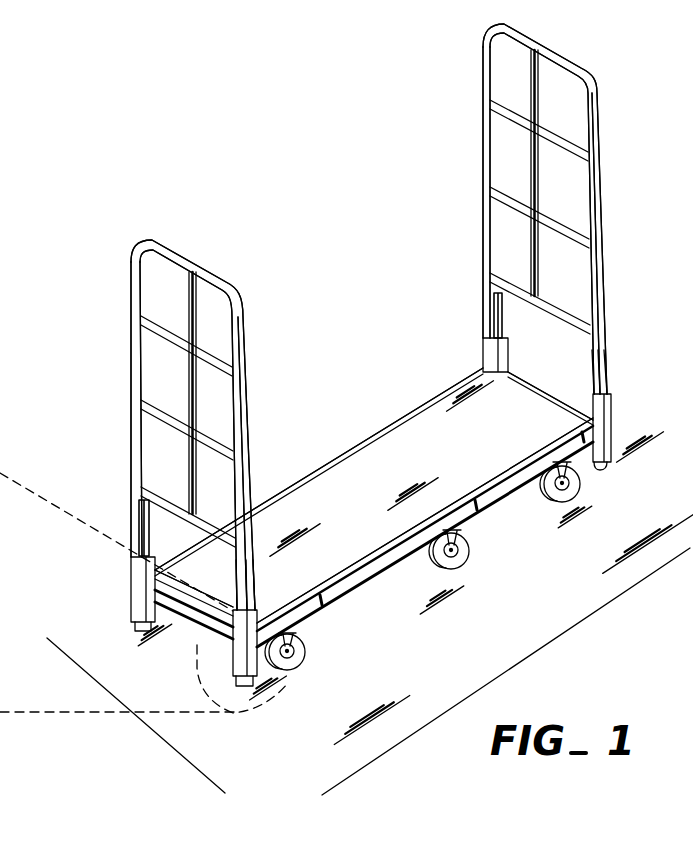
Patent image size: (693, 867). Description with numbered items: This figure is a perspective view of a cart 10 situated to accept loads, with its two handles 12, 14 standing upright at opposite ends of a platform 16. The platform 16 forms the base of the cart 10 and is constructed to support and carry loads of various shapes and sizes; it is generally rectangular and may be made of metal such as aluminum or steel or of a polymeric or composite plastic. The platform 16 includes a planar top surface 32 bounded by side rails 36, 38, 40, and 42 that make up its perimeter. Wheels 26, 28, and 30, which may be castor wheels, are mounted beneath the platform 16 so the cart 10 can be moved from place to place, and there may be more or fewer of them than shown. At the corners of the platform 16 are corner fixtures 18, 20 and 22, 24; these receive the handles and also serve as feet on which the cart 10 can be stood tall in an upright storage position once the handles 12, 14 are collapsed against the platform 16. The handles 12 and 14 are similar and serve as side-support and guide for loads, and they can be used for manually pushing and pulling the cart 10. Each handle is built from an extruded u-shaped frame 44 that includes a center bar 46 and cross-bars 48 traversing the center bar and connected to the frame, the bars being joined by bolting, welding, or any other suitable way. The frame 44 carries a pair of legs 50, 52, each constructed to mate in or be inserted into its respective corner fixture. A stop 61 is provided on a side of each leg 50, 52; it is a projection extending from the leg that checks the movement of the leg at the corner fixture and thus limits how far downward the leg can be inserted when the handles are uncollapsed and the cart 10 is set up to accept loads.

The cart 10 is at (216, 151).
The handle 12 is at (478, 162).
The handle 14 is at (124, 290).
The platform 16 is at (394, 408).
The corner fixture 18 is at (616, 428).
The corner fixture 20 is at (514, 354).
The corner fixture 22 is at (130, 579).
The corner fixture 24 is at (228, 643).
The wheel 26 is at (305, 670).
The wheel 28 is at (472, 565).
The wheel 30 is at (590, 494).
The planar top surface 32 is at (320, 487).
The side rail 36 is at (494, 503).
The side rail 38 is at (556, 398).
The side rail 40 is at (433, 394).
The side rail 42 is at (183, 618).
The u-shaped frame 44 is at (244, 395).
The center bar 46 is at (191, 418).
The cross-bar 48 is at (158, 338).
The leg 50 is at (250, 584).
The leg 52 is at (140, 505).
The stop 61 is at (147, 538).